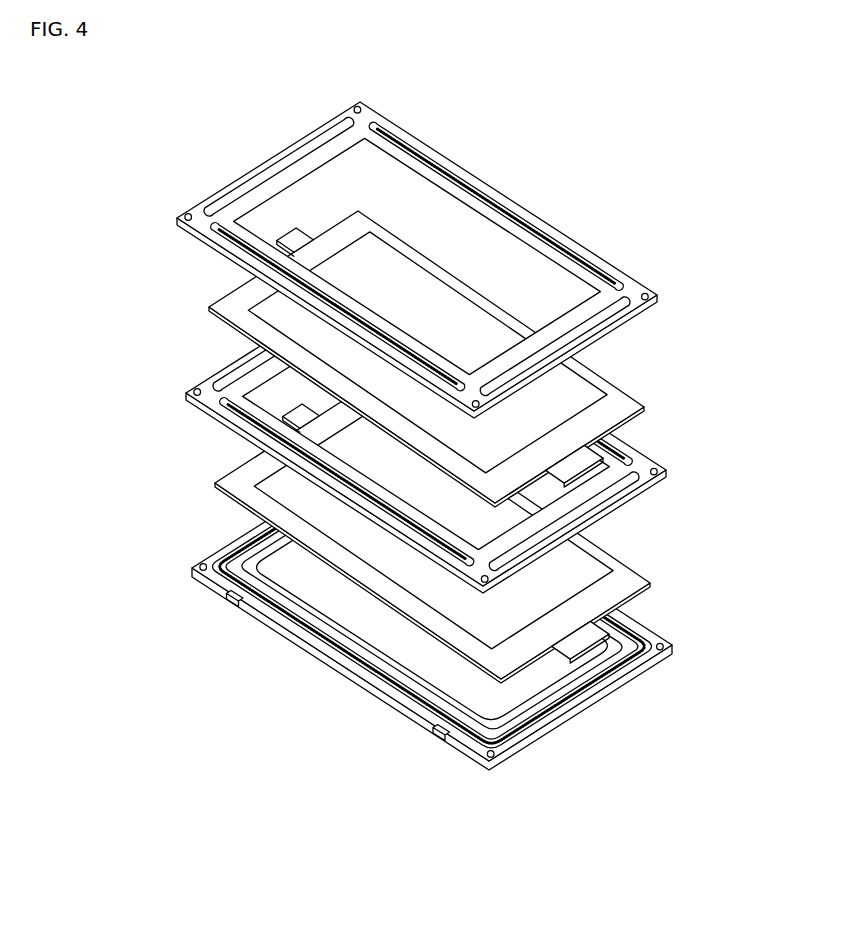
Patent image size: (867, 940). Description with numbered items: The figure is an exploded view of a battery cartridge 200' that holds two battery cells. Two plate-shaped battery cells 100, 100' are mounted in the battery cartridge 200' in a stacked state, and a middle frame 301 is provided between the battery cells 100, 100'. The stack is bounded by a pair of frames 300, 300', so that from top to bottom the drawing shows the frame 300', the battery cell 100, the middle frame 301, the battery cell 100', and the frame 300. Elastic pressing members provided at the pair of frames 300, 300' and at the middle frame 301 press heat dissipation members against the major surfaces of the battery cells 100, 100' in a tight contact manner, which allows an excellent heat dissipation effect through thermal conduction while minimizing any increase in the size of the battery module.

The battery cartridge 200' is at (59, 172).
The frame 300' is at (395, 260).
The plate-shaped battery cell 100 is at (465, 359).
The middle frame 301 is at (205, 391).
The plate-shaped battery cell 100' is at (469, 535).
The frame 300 is at (425, 611).